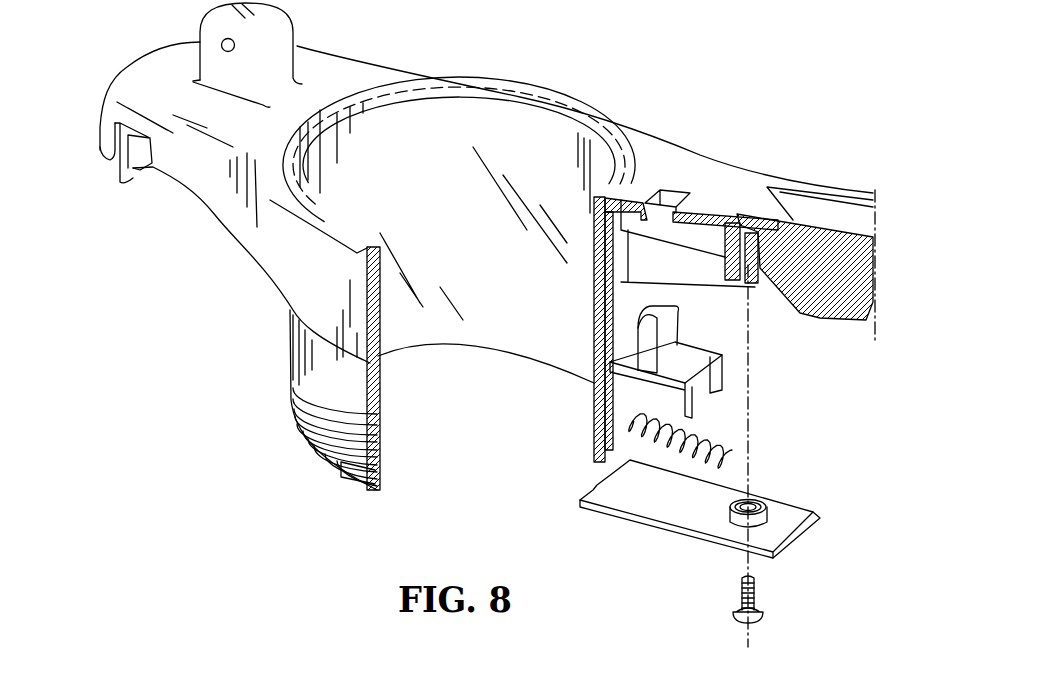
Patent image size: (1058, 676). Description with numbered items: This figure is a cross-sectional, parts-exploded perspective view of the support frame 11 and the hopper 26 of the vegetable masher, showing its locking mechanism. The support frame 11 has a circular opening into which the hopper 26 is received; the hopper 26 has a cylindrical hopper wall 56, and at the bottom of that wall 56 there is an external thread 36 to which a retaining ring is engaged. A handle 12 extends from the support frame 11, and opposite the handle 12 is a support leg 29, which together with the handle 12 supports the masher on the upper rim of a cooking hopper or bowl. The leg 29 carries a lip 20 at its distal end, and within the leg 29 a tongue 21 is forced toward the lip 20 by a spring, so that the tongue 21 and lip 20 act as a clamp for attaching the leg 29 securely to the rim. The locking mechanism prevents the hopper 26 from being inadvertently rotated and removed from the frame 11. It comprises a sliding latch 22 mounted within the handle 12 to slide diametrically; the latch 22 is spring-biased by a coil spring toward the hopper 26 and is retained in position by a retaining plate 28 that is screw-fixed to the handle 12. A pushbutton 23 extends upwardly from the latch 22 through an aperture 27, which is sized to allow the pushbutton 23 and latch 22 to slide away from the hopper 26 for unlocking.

The support frame 11 is at (503, 268).
The handle 12 is at (734, 298).
The lip 20 is at (81, 167).
The tongue 21 is at (136, 191).
The sliding latch 22 is at (706, 388).
The pushbutton 23 is at (686, 339).
The hopper 26 is at (229, 460).
The aperture 27 is at (709, 153).
The retaining plate 28 is at (700, 528).
The support leg 29 is at (182, 76).
The external thread 36 is at (343, 513).
The cylindrical hopper wall 56 is at (282, 400).